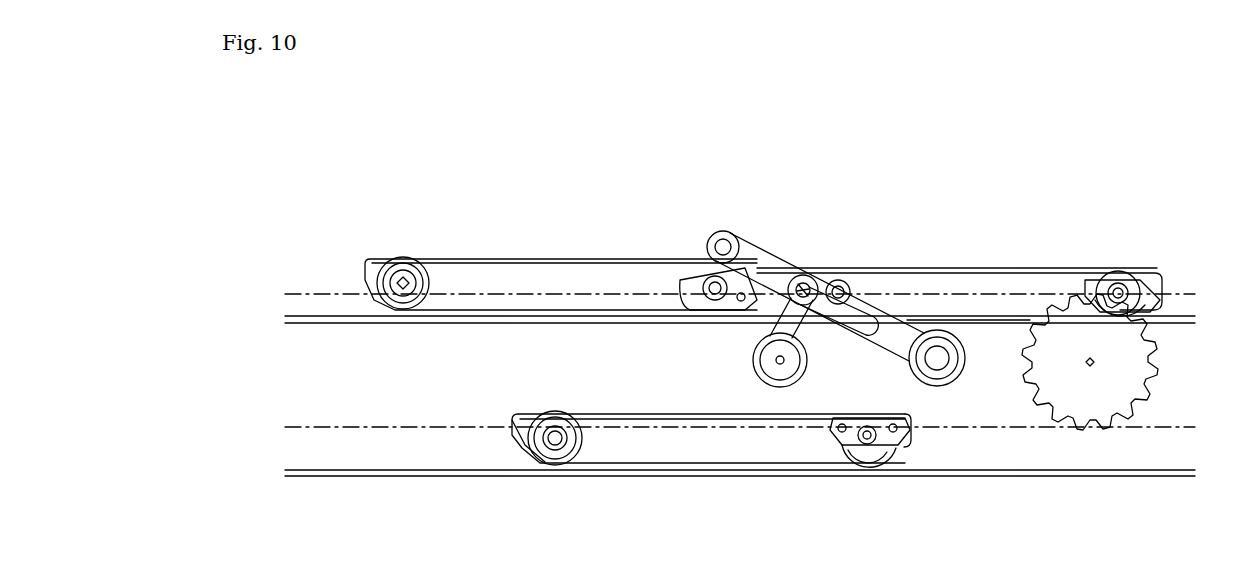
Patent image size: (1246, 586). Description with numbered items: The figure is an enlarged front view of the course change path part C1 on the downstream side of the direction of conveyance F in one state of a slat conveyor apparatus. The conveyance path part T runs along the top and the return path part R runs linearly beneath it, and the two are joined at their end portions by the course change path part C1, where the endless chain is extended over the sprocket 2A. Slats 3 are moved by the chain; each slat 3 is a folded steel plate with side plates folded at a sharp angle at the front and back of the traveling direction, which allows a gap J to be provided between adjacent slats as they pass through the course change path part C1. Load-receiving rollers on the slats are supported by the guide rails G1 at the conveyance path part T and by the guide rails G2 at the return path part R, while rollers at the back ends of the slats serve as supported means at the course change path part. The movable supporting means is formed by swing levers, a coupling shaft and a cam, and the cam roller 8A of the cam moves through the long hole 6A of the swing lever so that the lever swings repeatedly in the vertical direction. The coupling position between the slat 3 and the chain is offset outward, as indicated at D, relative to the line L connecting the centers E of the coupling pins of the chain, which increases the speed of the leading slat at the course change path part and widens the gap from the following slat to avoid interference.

The conveyance path part T is at (307, 262).
The return path part R is at (310, 450).
The direction of conveyance F is at (505, 204).
The slat 3 is at (540, 260).
The guide rail G1 is at (485, 324).
The guide rail G2 is at (605, 478).
The long hole 6A is at (733, 232).
The cam roller 8A is at (801, 274).
The gap J is at (770, 270).
The course change path part C1 is at (948, 226).
The line L is at (992, 262).
The center of coupling pin E is at (1095, 276).
The offset D is at (1143, 325).
The sprocket 2A is at (1152, 382).